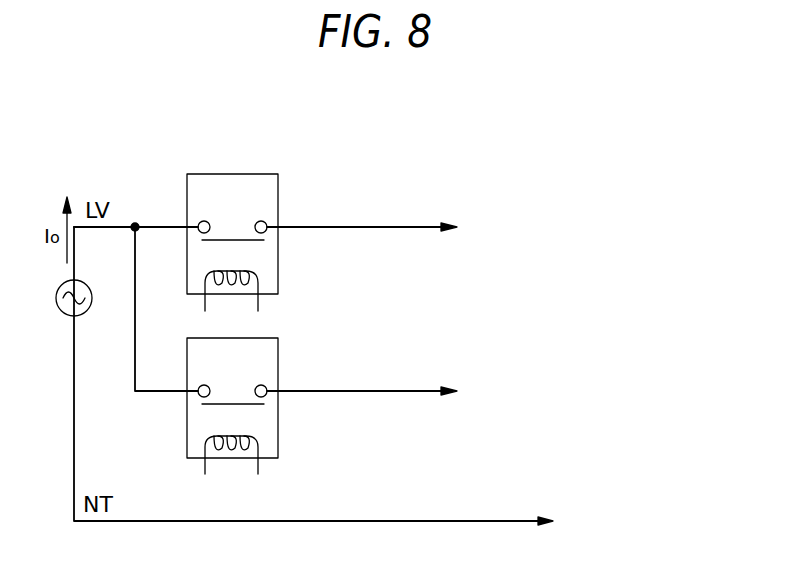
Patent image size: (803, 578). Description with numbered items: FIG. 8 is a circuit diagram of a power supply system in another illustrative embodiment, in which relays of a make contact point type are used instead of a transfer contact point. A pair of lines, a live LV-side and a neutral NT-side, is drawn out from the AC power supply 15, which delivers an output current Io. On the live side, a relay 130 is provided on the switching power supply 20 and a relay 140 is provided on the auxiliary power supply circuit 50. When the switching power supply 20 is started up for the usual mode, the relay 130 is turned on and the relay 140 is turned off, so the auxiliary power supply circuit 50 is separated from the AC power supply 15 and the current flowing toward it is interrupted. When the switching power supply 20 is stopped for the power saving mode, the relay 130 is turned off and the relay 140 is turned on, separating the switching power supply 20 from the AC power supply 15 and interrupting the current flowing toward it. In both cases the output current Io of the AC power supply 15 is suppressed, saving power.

The AC power supply 15 is at (63, 310).
The relay 130 is at (241, 174).
The relay 140 is at (258, 338).
The switching power supply 20 is at (474, 242).
The auxiliary power supply circuit 50 is at (487, 406).